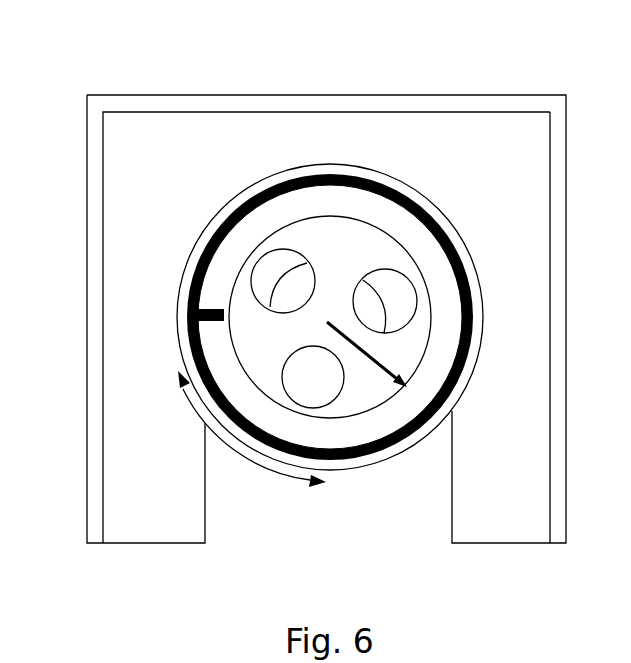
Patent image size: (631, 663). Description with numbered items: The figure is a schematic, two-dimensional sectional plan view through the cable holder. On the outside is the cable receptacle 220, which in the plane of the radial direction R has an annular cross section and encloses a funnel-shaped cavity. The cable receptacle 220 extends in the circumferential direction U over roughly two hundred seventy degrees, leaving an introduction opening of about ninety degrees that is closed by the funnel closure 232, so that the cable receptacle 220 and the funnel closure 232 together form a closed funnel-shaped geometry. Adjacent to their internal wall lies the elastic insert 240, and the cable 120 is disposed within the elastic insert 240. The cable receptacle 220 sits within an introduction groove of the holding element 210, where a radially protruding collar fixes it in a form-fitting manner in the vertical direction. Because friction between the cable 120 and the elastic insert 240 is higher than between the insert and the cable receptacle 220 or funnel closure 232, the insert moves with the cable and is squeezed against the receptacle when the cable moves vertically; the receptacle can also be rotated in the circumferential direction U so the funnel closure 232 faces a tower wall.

The cable 120 is at (363, 256).
The holding element 210 is at (152, 302).
The cable receptacle 220 is at (208, 232).
The funnel closure 232 is at (342, 462).
The elastic insert 240 is at (298, 202).
The radial direction R is at (377, 357).
The circumferential direction U is at (243, 463).